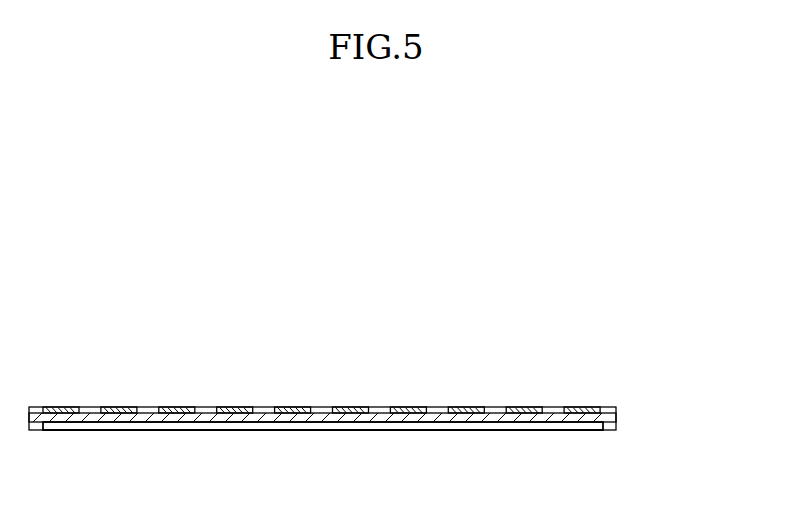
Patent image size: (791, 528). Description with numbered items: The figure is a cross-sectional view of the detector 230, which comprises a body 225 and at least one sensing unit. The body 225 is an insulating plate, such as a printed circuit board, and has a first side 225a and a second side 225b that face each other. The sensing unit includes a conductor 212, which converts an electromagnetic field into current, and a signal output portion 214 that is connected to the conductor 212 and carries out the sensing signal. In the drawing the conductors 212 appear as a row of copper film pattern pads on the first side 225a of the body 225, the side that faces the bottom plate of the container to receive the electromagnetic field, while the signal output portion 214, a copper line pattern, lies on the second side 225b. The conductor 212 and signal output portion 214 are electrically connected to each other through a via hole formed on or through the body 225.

The conductor 212 is at (63, 407).
The signal output portion 214 is at (58, 430).
The body 225 is at (386, 417).
The first side 225a is at (604, 428).
The second side 225b is at (617, 417).
The detector 230 is at (413, 385).